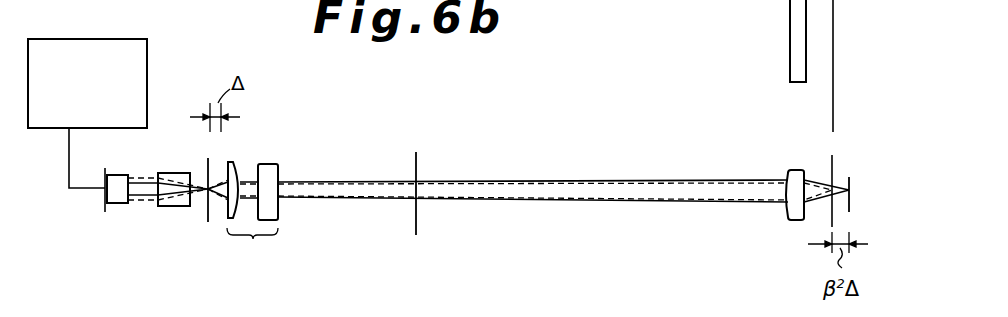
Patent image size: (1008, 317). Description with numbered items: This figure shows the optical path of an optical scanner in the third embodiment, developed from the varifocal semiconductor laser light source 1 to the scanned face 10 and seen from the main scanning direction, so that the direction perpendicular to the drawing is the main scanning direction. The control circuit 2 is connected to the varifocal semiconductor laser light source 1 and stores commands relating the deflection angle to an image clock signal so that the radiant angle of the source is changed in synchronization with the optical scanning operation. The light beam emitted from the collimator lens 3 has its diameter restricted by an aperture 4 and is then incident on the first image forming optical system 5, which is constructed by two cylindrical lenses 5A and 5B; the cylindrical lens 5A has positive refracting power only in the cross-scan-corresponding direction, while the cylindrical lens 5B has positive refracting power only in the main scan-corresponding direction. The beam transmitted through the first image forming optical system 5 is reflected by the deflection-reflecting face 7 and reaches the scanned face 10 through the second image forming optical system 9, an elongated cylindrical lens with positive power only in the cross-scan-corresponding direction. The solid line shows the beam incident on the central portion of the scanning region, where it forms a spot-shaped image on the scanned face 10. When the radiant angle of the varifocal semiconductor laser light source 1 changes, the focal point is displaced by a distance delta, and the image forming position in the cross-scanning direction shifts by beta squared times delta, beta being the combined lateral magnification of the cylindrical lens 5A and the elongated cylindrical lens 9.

The varifocal semiconductor laser light source 1 is at (117, 187).
The control circuit 2 is at (147, 86).
The collimator lens 3 is at (175, 175).
The aperture 4 is at (206, 218).
The first image forming optical system 5 is at (252, 247).
The cylindrical lens 5A is at (235, 165).
The cylindrical lens 5B is at (272, 168).
The deflection-reflecting face 7 is at (419, 172).
The second image forming optical system 9 is at (794, 172).
The scanned face 10 is at (833, 172).